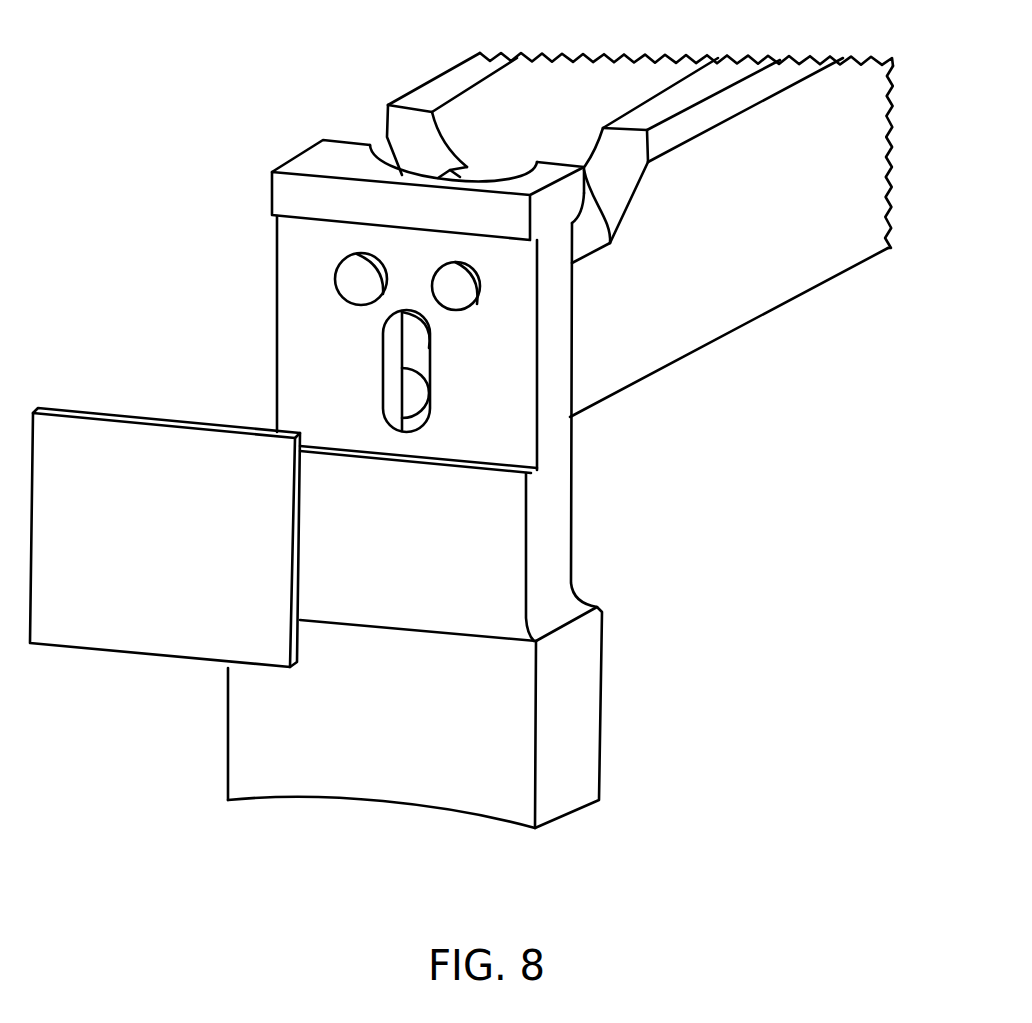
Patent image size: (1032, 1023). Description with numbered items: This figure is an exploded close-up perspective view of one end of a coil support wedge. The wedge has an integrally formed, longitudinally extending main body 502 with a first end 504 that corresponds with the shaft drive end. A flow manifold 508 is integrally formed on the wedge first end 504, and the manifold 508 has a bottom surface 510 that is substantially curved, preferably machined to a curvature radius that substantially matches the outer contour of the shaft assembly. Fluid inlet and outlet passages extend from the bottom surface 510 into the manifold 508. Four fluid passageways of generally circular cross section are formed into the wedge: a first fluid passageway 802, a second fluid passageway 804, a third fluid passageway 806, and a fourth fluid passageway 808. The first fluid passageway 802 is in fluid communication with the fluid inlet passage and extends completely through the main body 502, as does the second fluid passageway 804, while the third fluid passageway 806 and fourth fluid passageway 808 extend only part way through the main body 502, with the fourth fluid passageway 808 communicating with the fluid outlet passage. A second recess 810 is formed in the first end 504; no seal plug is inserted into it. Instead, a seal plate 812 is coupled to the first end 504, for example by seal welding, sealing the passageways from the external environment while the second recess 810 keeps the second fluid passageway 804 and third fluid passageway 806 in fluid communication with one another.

The main body 502 is at (875, 65).
The first end 504 is at (282, 193).
The flow manifold 508 is at (557, 530).
The bottom surface 510 is at (383, 802).
The first fluid passageway 802 is at (443, 281).
The second fluid passageway 804 is at (413, 392).
The third fluid passageway 806 is at (423, 335).
The fourth fluid passageway 808 is at (355, 293).
The second recess 810 is at (390, 360).
The seal plate 812 is at (188, 553).